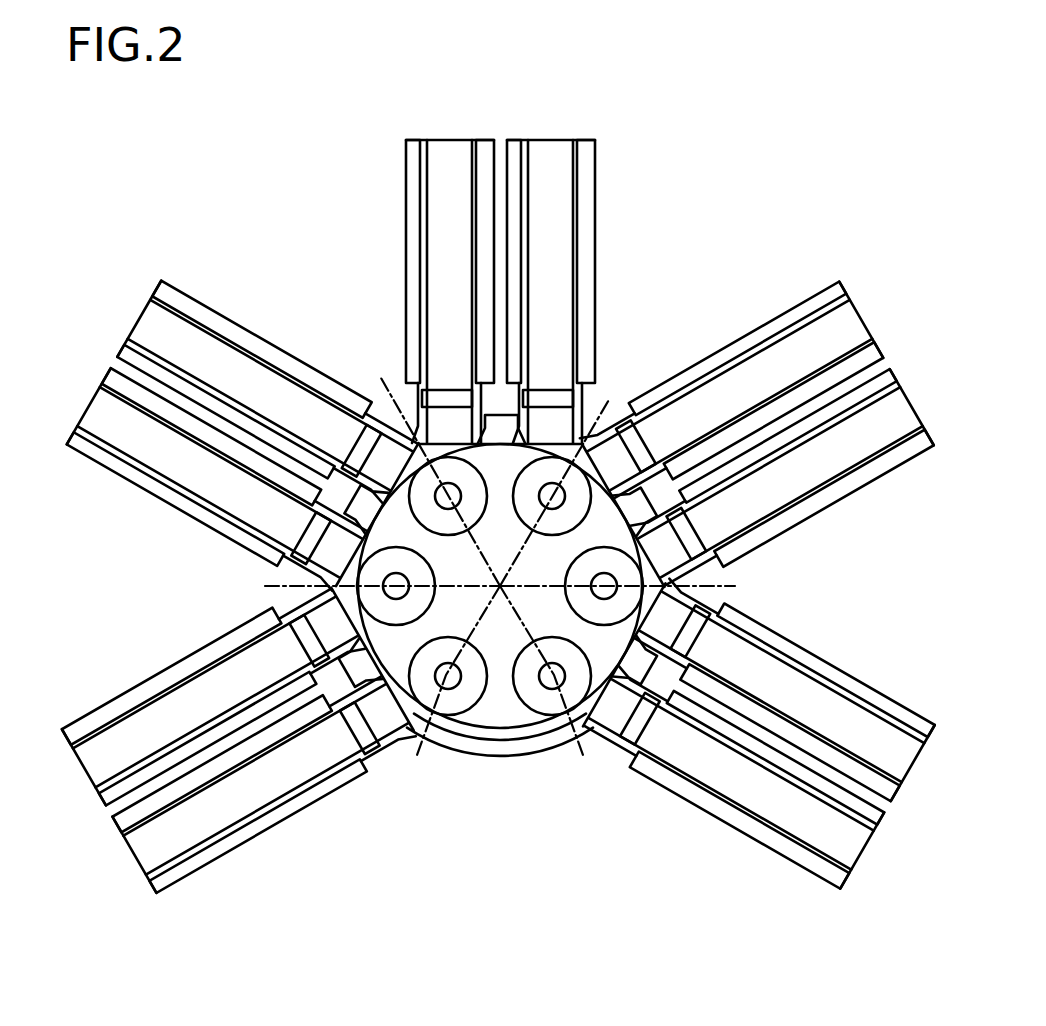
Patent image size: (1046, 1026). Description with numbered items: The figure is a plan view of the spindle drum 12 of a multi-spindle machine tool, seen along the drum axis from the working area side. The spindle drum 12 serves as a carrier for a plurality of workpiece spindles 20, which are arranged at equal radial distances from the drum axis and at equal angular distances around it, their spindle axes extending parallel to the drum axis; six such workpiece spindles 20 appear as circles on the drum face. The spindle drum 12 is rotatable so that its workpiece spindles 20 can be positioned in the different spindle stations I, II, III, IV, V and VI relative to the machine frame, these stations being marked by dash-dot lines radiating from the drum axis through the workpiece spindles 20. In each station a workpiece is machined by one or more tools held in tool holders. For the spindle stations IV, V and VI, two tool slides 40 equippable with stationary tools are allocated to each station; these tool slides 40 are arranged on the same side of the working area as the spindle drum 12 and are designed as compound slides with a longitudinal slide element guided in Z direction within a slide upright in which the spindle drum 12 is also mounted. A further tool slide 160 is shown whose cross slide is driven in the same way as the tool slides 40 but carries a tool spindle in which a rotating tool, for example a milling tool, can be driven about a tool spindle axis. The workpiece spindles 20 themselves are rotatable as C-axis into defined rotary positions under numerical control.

The spindle drum 12 is at (544, 753).
The workpiece spindle 20 is at (473, 683).
The tool slide 40 is at (796, 474).
The tool slide 160 is at (807, 706).
The spindle station I is at (417, 755).
The spindle station II is at (583, 755).
The spindle station III is at (712, 590).
The spindle station IV is at (610, 398).
The spindle station V is at (381, 378).
The spindle station VI is at (265, 586).